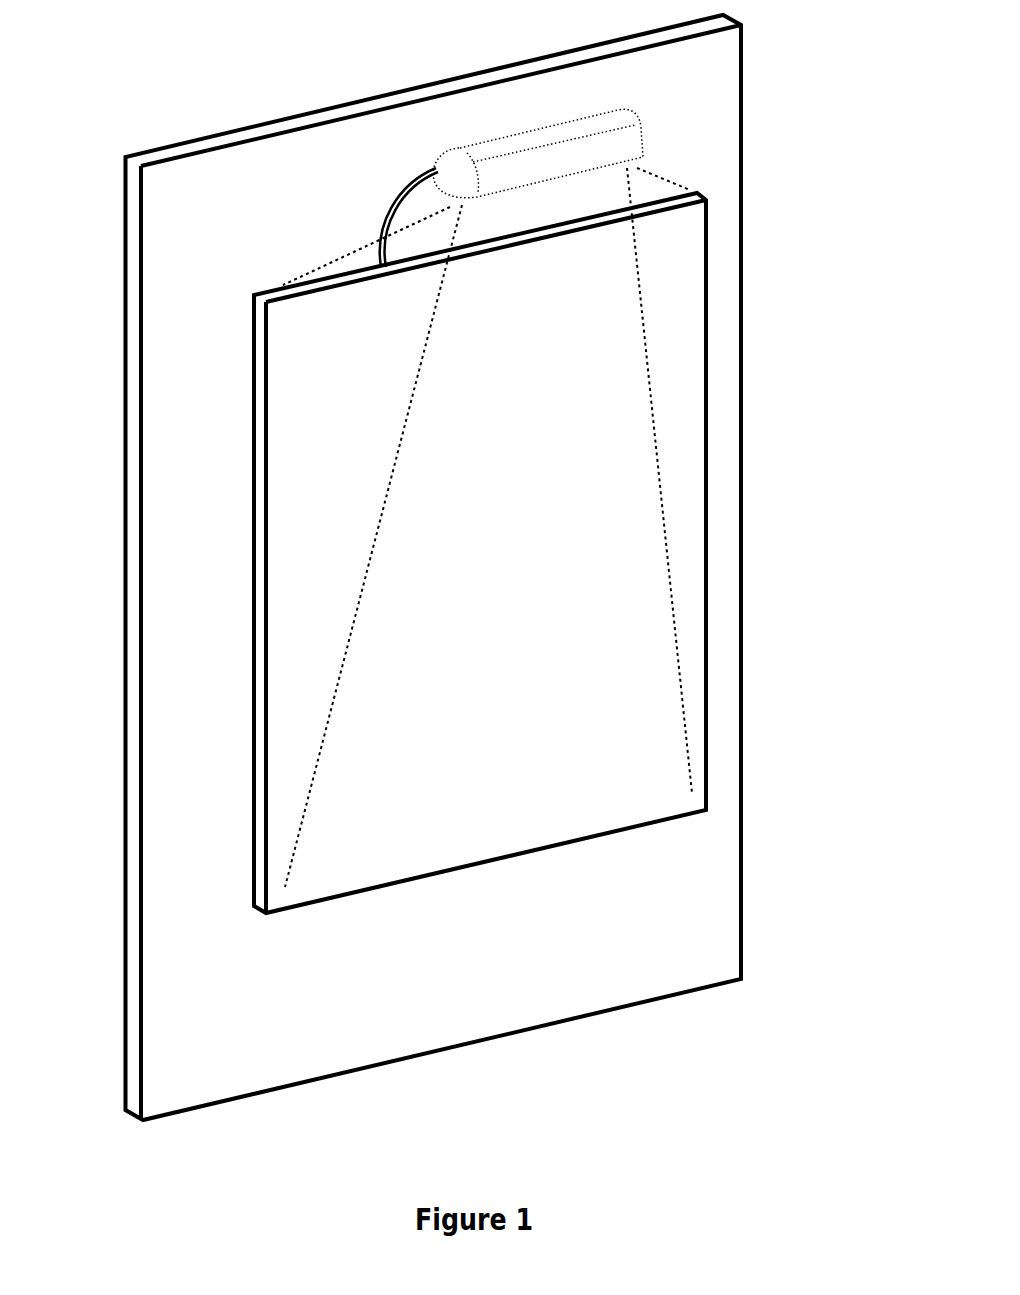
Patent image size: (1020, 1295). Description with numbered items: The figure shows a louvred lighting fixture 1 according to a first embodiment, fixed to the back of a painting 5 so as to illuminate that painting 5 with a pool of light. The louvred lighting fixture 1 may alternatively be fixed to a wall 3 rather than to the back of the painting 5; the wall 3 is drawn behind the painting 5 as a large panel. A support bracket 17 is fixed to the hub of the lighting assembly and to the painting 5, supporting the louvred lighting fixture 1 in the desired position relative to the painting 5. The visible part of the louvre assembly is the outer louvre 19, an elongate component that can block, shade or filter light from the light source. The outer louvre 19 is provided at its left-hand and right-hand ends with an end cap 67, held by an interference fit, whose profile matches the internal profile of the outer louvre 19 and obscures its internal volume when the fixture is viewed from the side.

The louvred lighting fixture 1 is at (655, 133).
The wall 3 is at (740, 492).
The painting 5 is at (710, 745).
The support bracket 17 is at (405, 187).
The outer louvre 19 is at (492, 143).
The end cap 67 is at (453, 187).